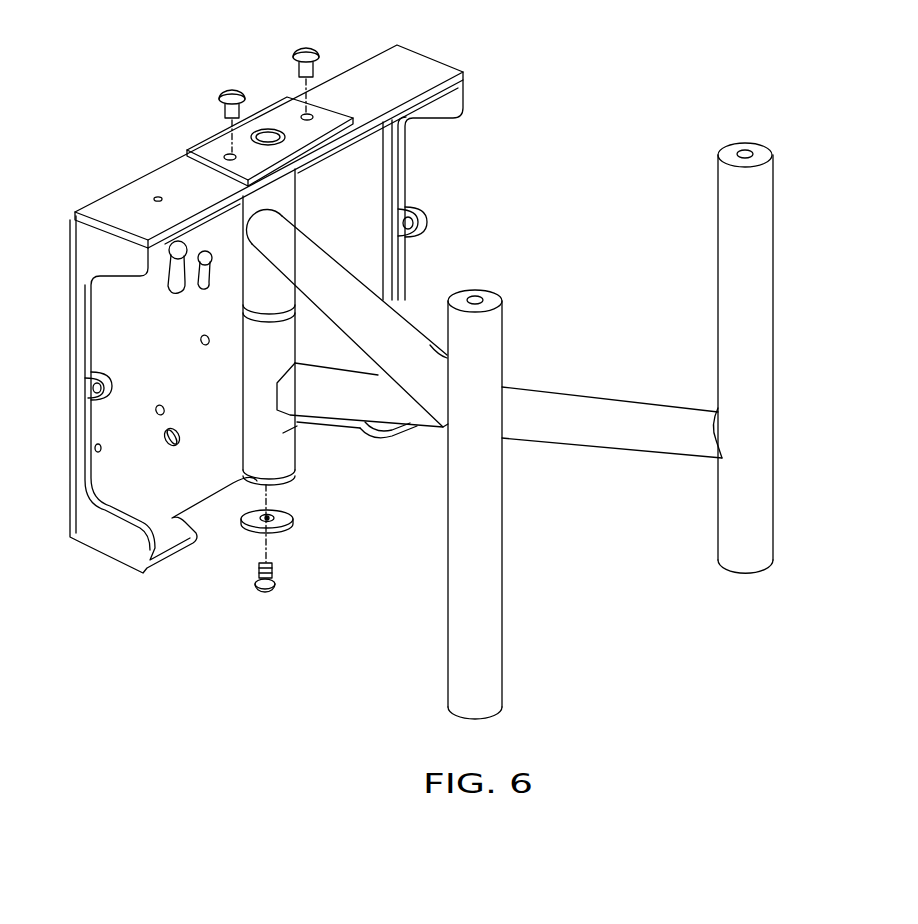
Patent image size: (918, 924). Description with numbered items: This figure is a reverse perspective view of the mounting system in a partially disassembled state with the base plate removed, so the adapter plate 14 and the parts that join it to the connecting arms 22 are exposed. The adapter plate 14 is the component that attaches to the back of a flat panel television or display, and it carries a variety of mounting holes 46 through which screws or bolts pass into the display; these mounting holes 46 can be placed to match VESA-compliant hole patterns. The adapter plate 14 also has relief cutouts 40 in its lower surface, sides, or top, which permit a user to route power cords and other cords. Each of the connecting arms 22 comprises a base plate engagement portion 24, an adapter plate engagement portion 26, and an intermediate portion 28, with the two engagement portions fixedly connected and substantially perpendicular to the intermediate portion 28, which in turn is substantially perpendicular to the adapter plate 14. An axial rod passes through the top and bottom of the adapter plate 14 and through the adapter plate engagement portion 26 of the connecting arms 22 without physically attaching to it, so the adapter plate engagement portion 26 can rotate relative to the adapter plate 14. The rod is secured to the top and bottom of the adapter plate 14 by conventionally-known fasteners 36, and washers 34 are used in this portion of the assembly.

The adapter plate 14 is at (381, 83).
The connecting arms 22 is at (713, 461).
The base plate engagement portion 24 is at (485, 343).
The adapter plate engagement portion 26 is at (277, 196).
The intermediate portion 28 is at (407, 342).
The washers 34 is at (296, 523).
The fasteners 36 is at (312, 60).
The relief cutouts 40 is at (413, 252).
The mounting holes 46 is at (203, 247).